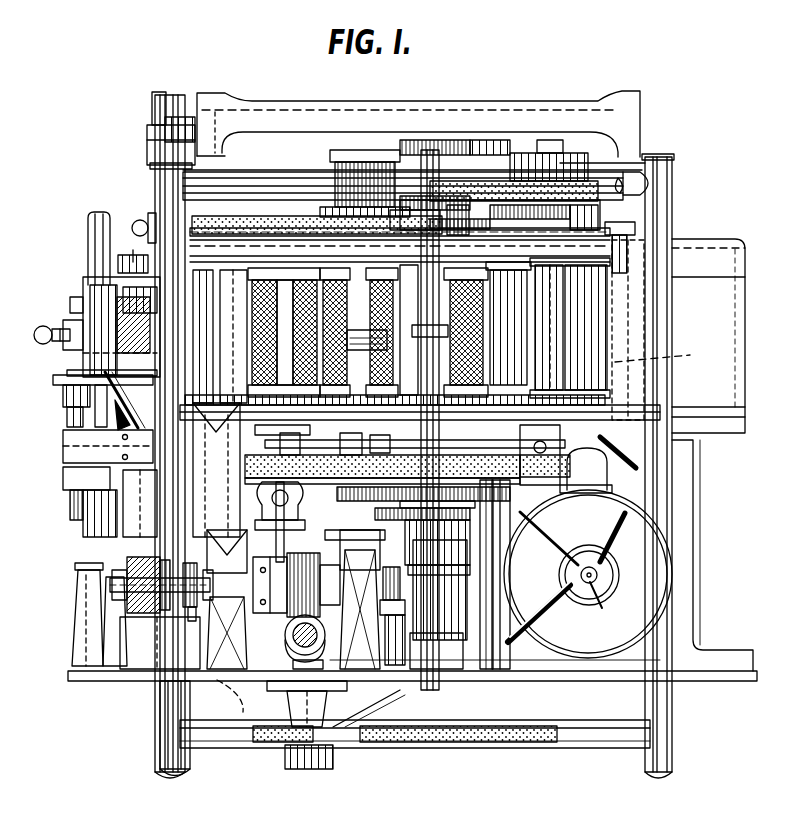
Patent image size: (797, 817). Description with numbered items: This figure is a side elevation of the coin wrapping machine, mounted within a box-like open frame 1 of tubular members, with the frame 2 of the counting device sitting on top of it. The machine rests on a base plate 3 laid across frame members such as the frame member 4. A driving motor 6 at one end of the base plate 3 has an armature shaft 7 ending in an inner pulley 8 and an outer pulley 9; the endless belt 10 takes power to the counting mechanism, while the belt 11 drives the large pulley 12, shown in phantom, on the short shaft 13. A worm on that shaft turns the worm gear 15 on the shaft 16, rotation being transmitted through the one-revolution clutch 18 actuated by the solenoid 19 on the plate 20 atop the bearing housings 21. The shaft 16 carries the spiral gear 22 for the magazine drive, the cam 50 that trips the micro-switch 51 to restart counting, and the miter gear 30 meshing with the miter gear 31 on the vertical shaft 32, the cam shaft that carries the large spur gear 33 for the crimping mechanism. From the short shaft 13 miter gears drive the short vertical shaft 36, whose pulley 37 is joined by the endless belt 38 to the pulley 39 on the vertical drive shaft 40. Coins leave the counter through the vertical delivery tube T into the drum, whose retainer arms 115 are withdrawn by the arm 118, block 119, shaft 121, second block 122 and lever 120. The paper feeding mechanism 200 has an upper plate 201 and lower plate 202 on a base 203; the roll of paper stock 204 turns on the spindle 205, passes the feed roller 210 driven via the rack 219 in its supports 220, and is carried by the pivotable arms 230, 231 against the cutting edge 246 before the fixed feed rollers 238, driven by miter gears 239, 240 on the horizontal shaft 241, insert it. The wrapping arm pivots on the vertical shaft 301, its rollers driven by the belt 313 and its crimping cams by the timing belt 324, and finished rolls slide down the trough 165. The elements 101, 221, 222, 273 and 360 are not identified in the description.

The frame 1 is at (155, 183).
The frame of the counting device 2 is at (525, 104).
The base plate 3 is at (725, 681).
The frame member 4 is at (32, 377).
The driving motor 6 is at (633, 603).
The armature shaft 7 is at (602, 605).
The inner pulley 8 is at (614, 566).
The outer pulley 9 is at (597, 563).
The endless belt 10 is at (596, 520).
The belt 11 is at (572, 616).
The large pulley 12 is at (235, 708).
The short shaft 13 is at (287, 640).
The worm gear 15 is at (313, 587).
The shaft 16 is at (160, 605).
The one-revolution clutch 18 is at (300, 624).
The solenoid 19 is at (298, 493).
The plate 20 is at (338, 540).
The bearing housings 21 is at (170, 545).
The spiral gear 22 is at (128, 560).
The miter gear 30 is at (373, 609).
The miter gear 31 is at (447, 604).
The vertical shaft 32 is at (395, 618).
The large spur gear 33 is at (522, 483).
The short vertical shaft 36 is at (309, 770).
The pulley 37 is at (260, 748).
The endless belt 38 is at (398, 748).
The pulley 39 is at (545, 748).
The vertical drive shaft 40 is at (505, 622).
The cam 50 is at (190, 612).
The micro-switch 51 is at (189, 728).
The indicator 101 is at (137, 246).
The arms 115 is at (88, 293).
The arm 118 is at (68, 450).
The block 119 is at (95, 458).
The lever 120 is at (85, 360).
The shaft 121 is at (103, 402).
The second block 122 is at (125, 393).
The trough 165 is at (203, 515).
The paper feeding mechanism 200 is at (288, 233).
The upper plate 201 is at (300, 240).
The lower plate 202 is at (355, 407).
The base 203 is at (693, 480).
The roll of paper stock 204 is at (743, 385).
The spindle 205 is at (664, 330).
The feed roller 210 is at (592, 327).
The rack 219 is at (485, 210).
The supports 220 is at (450, 208).
The gear 221 is at (405, 198).
The roller 222 is at (310, 331).
The arm 230 is at (288, 265).
The arm 231 is at (381, 331).
The feed rollers 238 is at (353, 332).
The miter gears 239 is at (415, 420).
The miter gears 240 is at (530, 464).
The horizontal shaft 241 is at (380, 440).
The cutting edge 246 is at (488, 330).
The gear 273 is at (333, 200).
The vertical shaft 301 is at (500, 593).
The belt 313 is at (317, 217).
The timing belt 324 is at (382, 467).
The gear 360 is at (378, 512).
The vertical delivery tube T is at (90, 222).